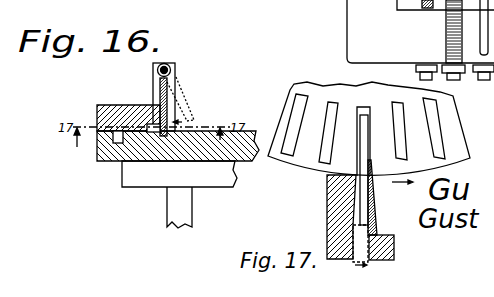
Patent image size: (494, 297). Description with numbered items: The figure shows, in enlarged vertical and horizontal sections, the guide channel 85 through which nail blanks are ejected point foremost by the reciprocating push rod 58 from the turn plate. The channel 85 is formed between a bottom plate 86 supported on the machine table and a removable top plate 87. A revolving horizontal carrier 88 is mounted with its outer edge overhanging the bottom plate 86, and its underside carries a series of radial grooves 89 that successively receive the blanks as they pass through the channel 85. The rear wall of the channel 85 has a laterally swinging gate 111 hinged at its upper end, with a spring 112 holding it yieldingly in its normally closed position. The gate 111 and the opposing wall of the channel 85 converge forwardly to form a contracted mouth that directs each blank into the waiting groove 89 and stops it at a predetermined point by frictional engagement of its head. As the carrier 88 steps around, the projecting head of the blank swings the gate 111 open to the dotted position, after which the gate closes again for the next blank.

In FIG. 17, the push rod 58 is at (368, 266).
In FIG. 16, the guide channel 85 is at (154, 131).
In FIG. 17, the guide channel 85 is at (354, 236).
In FIG. 16, the bottom plate 86 is at (252, 161).
In FIG. 16, the top plate 87 is at (118, 110).
In FIG. 17, the top plate 87 is at (330, 213).
In FIG. 17, the carrier 88 is at (458, 147).
In FIG. 17, the radial grooves 89 is at (328, 165).
In FIG. 16, the gate 111 is at (167, 110).
In FIG. 17, the gate 111 is at (376, 202).
In FIG. 16, the spring 112 is at (169, 80).